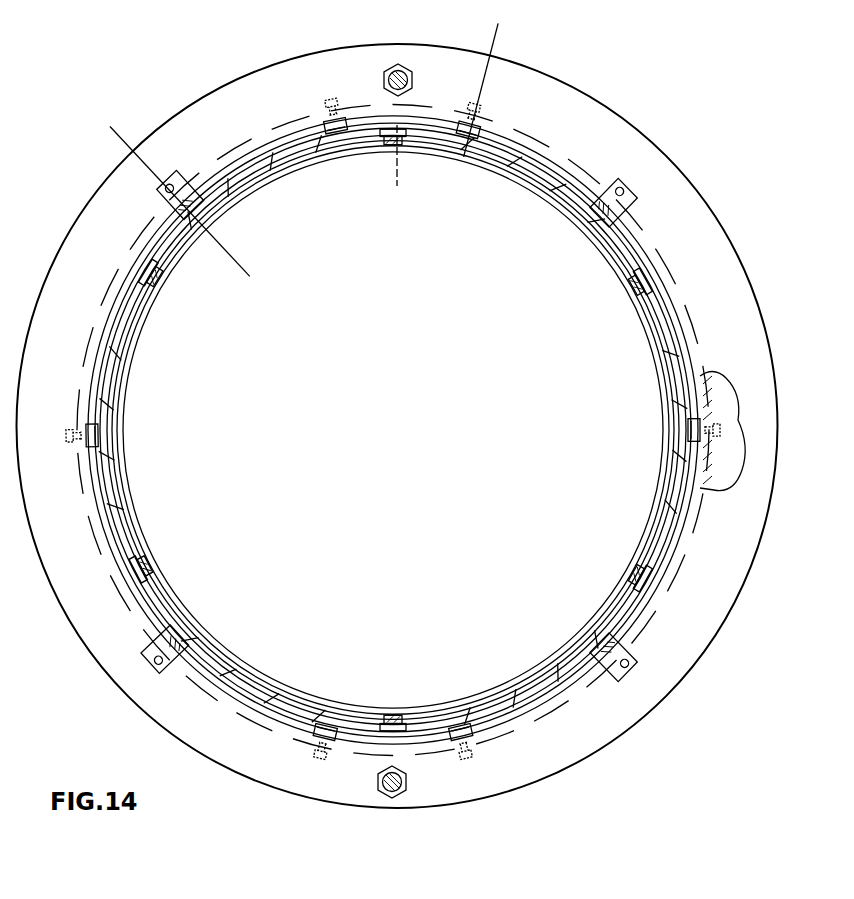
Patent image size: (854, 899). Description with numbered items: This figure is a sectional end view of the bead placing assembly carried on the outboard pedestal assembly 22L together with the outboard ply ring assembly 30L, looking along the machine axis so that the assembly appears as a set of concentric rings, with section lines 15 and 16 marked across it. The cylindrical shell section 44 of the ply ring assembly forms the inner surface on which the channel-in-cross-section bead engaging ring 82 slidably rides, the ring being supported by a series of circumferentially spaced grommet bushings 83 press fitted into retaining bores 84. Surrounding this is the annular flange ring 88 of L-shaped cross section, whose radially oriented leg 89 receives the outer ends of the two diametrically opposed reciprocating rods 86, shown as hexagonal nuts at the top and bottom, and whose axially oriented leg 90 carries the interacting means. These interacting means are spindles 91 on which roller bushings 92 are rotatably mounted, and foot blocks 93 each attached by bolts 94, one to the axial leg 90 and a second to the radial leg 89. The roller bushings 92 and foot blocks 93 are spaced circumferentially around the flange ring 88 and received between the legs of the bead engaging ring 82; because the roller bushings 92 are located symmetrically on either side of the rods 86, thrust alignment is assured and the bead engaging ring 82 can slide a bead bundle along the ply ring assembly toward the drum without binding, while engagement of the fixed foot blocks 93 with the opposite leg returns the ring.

The section line 15— 15 is at (461, 29).
The section line 16— 16 is at (104, 159).
The outboard pedestal assembly 22L is at (709, 190).
The outboard ply ring assembly 30L is at (606, 251).
The cylindrical shell section 44 is at (550, 196).
The bead engaging ring 82 is at (662, 314).
The grommet bushings 83 is at (385, 144).
The retaining bores 84 is at (400, 134).
The reciprocating rods 86 is at (414, 77).
The flange ring 88 is at (326, 46).
The radially oriented leg 89 is at (600, 115).
The axially oriented leg 90 is at (498, 125).
The spindle 91 is at (320, 102).
The roller bushing 92 is at (334, 138).
The foot block 93 is at (177, 182).
The bolts 94 is at (161, 197).